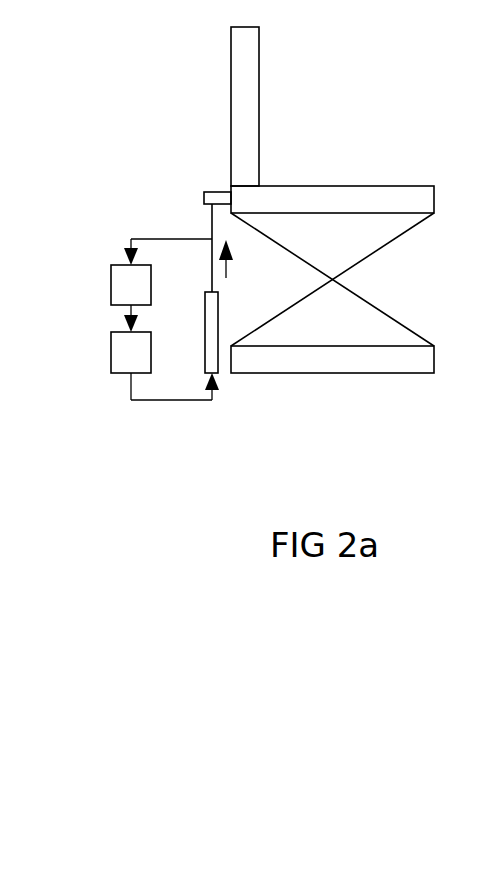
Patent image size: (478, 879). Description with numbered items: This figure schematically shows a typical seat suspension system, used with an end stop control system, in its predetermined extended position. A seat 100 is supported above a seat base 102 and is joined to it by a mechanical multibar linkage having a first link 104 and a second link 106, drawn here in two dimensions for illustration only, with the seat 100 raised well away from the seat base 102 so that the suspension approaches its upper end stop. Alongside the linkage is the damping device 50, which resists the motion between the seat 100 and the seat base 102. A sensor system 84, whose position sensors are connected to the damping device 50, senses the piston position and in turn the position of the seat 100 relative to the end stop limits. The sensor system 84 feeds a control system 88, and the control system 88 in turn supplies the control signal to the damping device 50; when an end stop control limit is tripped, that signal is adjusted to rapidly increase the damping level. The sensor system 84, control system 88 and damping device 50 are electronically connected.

The damping device 50 is at (204, 332).
The sensor system 84 is at (119, 296).
The control system 88 is at (119, 363).
The seat 100 is at (310, 208).
The seat base 102 is at (310, 369).
The first link 104 is at (388, 245).
The second link 106 is at (374, 306).